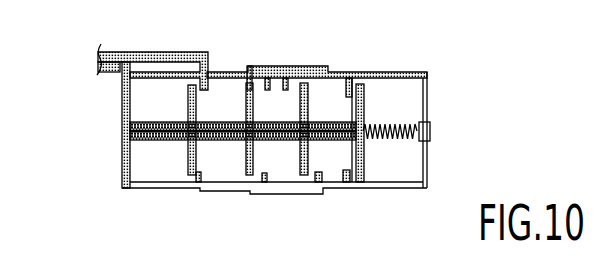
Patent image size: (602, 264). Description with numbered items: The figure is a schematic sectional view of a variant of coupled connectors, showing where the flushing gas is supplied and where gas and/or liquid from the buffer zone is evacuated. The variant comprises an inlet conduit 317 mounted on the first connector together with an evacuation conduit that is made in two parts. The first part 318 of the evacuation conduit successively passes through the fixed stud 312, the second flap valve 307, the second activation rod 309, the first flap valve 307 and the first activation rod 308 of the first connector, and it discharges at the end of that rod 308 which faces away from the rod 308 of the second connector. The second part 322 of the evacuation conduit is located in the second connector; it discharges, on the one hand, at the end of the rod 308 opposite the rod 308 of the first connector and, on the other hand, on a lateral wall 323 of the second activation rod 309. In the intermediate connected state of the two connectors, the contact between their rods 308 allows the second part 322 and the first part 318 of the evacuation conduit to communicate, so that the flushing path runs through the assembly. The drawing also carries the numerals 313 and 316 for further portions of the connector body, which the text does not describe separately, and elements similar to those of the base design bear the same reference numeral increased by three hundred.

The flap valve 307 is at (333, 100).
The first activation rod 308 is at (280, 123).
The second activation rod 309 is at (215, 143).
The fixed stud 312 is at (122, 138).
The cover 313 is at (268, 66).
The housing 316 is at (220, 97).
The inlet conduit 317 is at (172, 51).
The first part of the evacuation conduit 318 is at (110, 73).
The second part of the evacuation conduit 322 is at (315, 140).
The lateral wall 323 is at (341, 122).